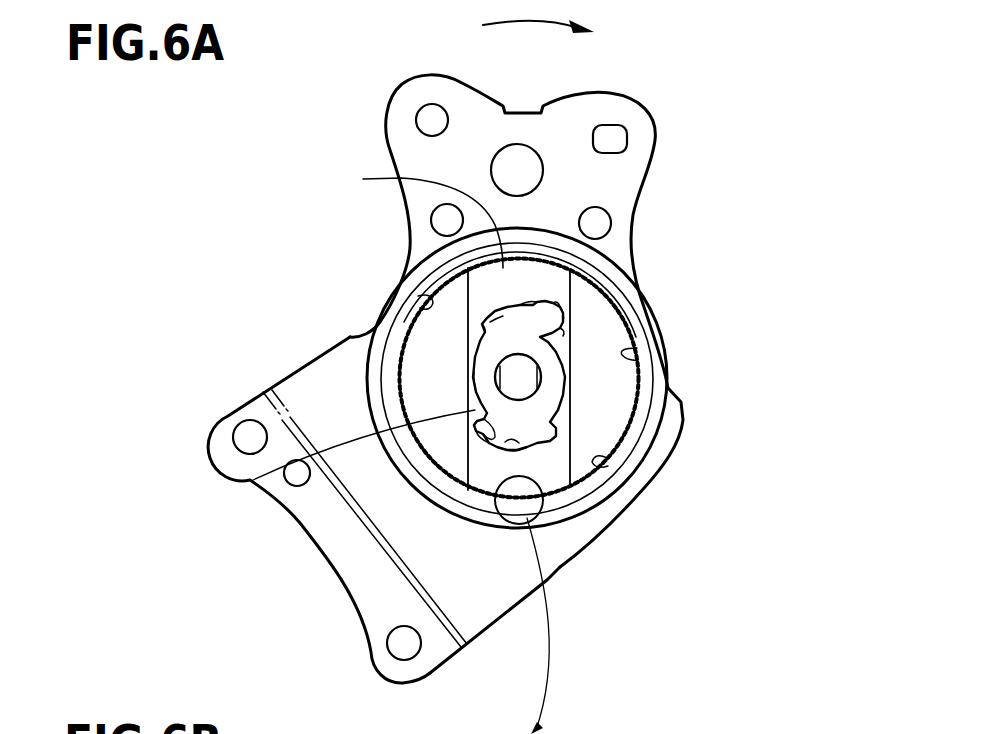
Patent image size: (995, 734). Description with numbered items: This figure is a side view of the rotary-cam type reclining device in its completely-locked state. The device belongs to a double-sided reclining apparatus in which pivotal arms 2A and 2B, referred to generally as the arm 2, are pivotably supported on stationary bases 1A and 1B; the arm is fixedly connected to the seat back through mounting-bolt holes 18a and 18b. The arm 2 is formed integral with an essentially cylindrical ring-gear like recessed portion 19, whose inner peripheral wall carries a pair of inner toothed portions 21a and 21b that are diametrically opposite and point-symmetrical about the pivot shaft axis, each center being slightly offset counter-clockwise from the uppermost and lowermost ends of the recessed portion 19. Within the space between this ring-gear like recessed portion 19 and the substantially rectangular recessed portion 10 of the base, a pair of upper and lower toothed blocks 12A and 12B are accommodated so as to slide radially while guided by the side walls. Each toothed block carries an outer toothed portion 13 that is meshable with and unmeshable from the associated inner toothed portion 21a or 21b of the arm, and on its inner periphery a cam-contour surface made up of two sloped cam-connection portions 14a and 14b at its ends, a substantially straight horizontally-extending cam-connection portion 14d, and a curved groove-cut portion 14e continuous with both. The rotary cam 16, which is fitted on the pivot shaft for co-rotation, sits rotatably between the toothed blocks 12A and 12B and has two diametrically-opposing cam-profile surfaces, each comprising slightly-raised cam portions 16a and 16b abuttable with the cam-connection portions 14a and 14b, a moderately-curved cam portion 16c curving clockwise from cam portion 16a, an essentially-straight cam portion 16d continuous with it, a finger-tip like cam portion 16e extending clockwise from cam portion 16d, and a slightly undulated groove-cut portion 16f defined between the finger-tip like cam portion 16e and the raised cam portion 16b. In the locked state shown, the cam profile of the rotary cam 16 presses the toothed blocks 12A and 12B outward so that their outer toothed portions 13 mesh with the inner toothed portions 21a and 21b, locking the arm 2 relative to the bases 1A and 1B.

The stationary base 1A is at (490, 648).
The stationary base 1B is at (468, 623).
The pivotal arm 2 is at (581, 321).
The pivotal arm 2A is at (581, 321).
The pivotal arm 2B is at (627, 113).
The recessed portion 10 is at (253, 480).
The upper toothed block 12A is at (508, 272).
The lower toothed block 12B is at (560, 447).
The outer toothed portion 13 is at (623, 567).
The cam-connection portion 14a is at (468, 352).
The cam-connection portion 14b is at (470, 382).
The straight cam-connection portion 14d is at (513, 455).
The curved groove-cut portion 14e is at (470, 470).
The rotary cam 16 is at (553, 380).
The slightly-raised cam portion 16a is at (470, 330).
The slightly-raised cam portion 16b is at (563, 333).
The moderately-curved cam portion 16c is at (493, 330).
The essentially-straight cam portion 16d is at (522, 303).
The finger-tip like cam portion 16e is at (560, 300).
The undulated groove-cut portion 16f is at (563, 315).
The mounting-bolt hole 18a is at (421, 109).
The mounting-bolt hole 18b is at (623, 138).
The ring-gear like recessed portion 19 is at (625, 353).
The inner toothed portion 21a is at (420, 305).
The inner toothed portion 21b is at (560, 480).